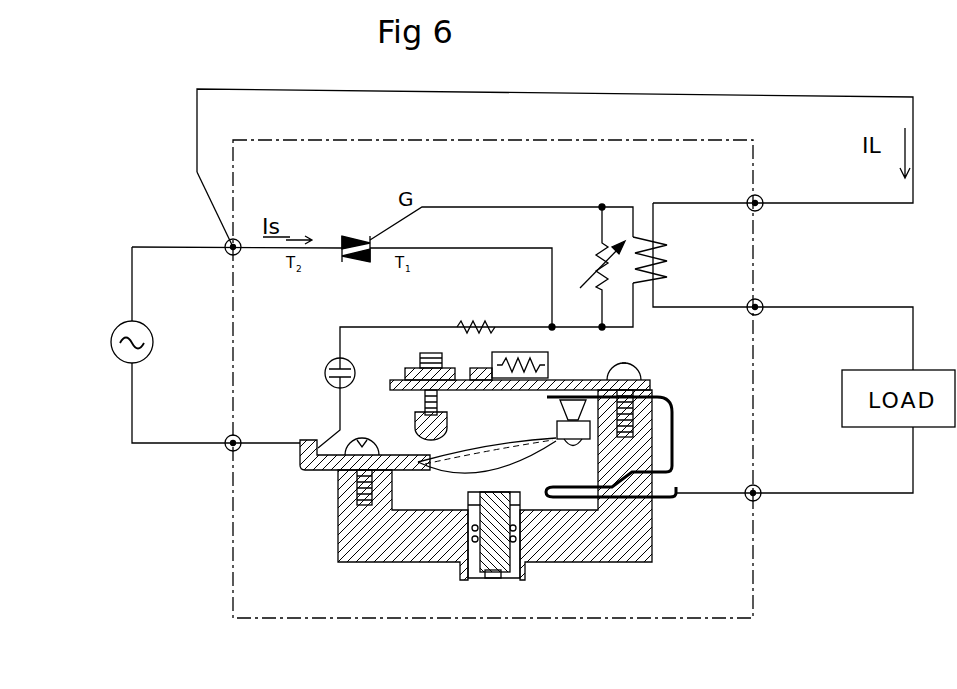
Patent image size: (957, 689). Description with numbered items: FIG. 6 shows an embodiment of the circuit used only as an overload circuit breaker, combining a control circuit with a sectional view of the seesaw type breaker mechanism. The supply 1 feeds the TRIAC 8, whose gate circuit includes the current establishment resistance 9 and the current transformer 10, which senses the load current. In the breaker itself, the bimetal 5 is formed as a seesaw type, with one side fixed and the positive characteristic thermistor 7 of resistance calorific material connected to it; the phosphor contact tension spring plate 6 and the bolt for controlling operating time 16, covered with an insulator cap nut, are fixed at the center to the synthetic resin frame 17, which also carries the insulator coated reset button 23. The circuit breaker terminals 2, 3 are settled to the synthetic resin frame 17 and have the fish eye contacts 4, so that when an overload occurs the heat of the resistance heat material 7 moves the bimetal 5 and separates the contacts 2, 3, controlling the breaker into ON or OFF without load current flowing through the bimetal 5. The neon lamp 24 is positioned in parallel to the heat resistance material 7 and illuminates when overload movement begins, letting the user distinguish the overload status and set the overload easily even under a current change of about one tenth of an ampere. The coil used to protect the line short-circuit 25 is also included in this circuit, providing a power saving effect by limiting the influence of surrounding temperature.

The AC power source 1 is at (112, 333).
The circuit breaker terminal 2 is at (562, 417).
The circuit breaker terminal 3 is at (573, 433).
The fish eye contacts 4 is at (652, 382).
The bimetal 5 is at (453, 378).
The contact tension spring plate 6 is at (468, 476).
The positive characteristic thermistor 7 is at (558, 357).
The TRIAC 8 is at (342, 241).
The current establishment resistance 9 is at (580, 287).
The current transformer 10 is at (655, 237).
The bolt for controlling operating time 16 is at (422, 397).
The synthetic resin frame 17 is at (652, 565).
The reset button 23 is at (525, 580).
The neon lamp 24 is at (322, 362).
The coil used to protect the line short-circuit 25 is at (677, 445).